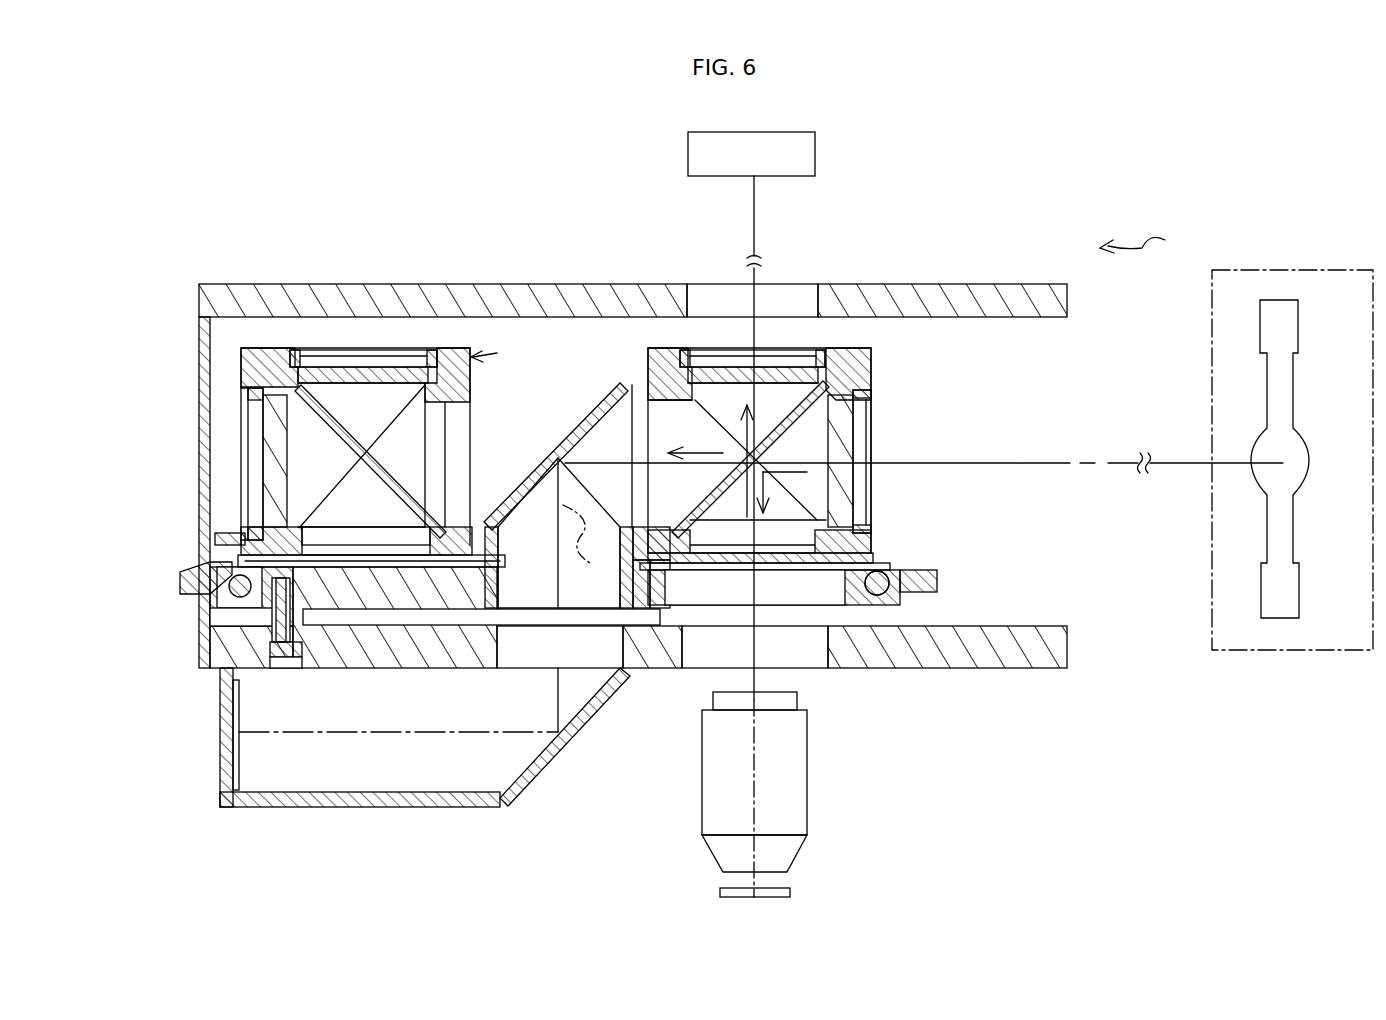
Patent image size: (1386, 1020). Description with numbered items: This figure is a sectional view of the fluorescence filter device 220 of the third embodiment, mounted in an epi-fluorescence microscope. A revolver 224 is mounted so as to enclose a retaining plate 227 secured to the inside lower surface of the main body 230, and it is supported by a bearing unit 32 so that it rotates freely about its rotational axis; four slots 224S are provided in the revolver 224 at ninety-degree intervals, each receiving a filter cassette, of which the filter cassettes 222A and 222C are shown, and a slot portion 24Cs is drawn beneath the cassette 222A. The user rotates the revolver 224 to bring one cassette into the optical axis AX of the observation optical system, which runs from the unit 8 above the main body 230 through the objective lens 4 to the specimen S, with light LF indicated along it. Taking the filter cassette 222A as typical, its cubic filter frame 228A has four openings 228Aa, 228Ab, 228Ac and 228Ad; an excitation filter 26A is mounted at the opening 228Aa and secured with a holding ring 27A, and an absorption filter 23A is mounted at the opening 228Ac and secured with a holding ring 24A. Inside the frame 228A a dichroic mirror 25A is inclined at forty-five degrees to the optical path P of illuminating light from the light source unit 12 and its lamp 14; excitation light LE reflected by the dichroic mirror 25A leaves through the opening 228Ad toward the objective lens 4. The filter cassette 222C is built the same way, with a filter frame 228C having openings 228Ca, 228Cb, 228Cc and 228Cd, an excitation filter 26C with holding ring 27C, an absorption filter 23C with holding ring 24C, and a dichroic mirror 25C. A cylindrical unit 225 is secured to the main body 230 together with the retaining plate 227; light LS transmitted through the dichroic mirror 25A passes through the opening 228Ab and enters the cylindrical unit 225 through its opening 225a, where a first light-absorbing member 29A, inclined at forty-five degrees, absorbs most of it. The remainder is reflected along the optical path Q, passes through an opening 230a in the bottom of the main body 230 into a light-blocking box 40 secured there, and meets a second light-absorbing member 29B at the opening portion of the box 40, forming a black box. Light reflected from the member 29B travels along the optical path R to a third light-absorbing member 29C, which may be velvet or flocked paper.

The light source / image pickup unit 8 is at (818, 150).
The light source unit 12 is at (1282, 270).
The lamp 14 is at (1294, 378).
The fluorescence filter device 220 is at (1218, 237).
The main body 230 is at (1017, 284).
The opening 230a is at (598, 668).
The filter cassette 222A is at (820, 410).
The filter cassette 222C is at (346, 398).
The revolver 224 is at (228, 588).
The slot 224S is at (215, 540).
The cylindrical unit 225 is at (502, 600).
The opening 225a is at (562, 348).
The retaining plate 227 is at (400, 598).
The cubic filter frame 228A is at (875, 385).
The opening 228Aa is at (872, 482).
The opening 228Ab is at (650, 408).
The opening 228Ac is at (770, 352).
The opening 228Ad is at (790, 538).
The holder of second unit 228C is at (241, 372).
The holder side wall 228Ca is at (246, 495).
The holder side wall 228Cb is at (470, 407).
The lens holding portion 228Cc is at (388, 350).
The holder bottom 228Cd is at (350, 546).
The absorption filter 23A is at (778, 380).
The lens 23C is at (349, 384).
The holding ring 24A is at (700, 365).
The frame block 24C is at (300, 348).
The slide plate 24Cs is at (885, 556).
The dichroic mirror 25A is at (818, 428).
The beam splitter prism 25C is at (395, 487).
The excitation filter 26A is at (856, 505).
The lens 26C is at (288, 467).
The holding ring 27A is at (868, 430).
The lens holder 27C is at (256, 432).
The first light-absorbing member 29A is at (528, 485).
The second light-absorbing member 29B is at (568, 740).
The third light-absorbing member 29C is at (240, 705).
The bearing unit 32 is at (890, 588).
The box 40 is at (300, 808).
The objective lens 4 is at (810, 822).
The optical axis AX is at (760, 763).
The specimen S is at (792, 890).
The optical path P is at (1088, 463).
The optical path Q is at (584, 618).
The optical path R is at (350, 735).
The fluorescence light LF is at (734, 455).
The light LS is at (695, 440).
The excitation light LE is at (791, 492).